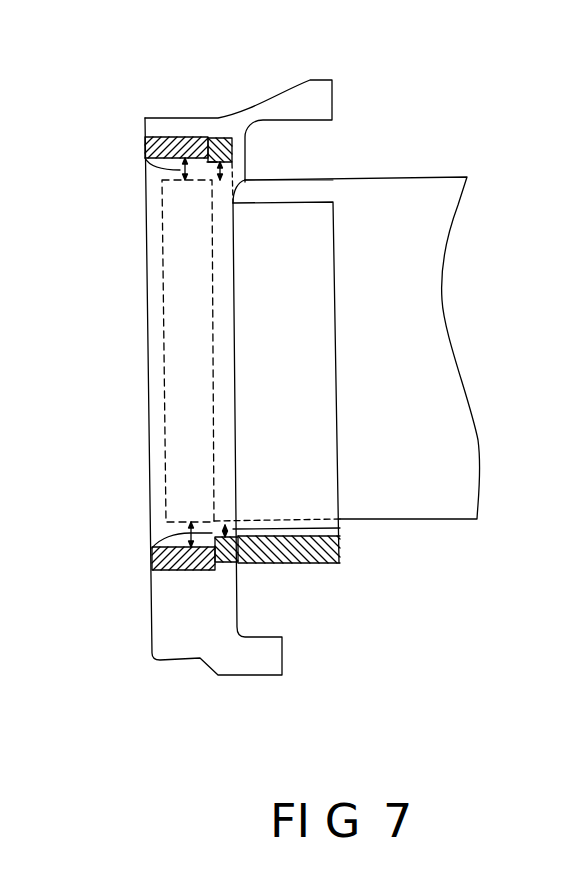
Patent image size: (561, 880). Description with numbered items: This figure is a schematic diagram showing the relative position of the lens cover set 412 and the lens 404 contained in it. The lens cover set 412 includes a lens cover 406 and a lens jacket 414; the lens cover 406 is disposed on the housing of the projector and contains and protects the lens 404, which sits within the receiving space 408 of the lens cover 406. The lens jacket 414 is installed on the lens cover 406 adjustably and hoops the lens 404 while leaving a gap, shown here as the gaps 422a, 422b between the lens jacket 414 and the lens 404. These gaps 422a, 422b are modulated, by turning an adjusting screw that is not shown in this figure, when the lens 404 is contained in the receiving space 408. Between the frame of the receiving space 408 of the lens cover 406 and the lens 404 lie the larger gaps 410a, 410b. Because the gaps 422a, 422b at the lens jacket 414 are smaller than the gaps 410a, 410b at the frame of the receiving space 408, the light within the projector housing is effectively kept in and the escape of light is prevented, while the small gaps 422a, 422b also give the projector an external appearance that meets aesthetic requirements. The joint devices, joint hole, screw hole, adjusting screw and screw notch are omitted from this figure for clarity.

The lens 404 is at (432, 177).
The lens cover 406 is at (308, 80).
The receiving space 408 is at (132, 162).
The gap 410a is at (145, 158).
The gap 410b is at (152, 548).
The lens cover set 412 is at (312, 753).
The lens jacket 414 is at (343, 557).
The gap 422a is at (222, 172).
The gap 422b is at (340, 528).